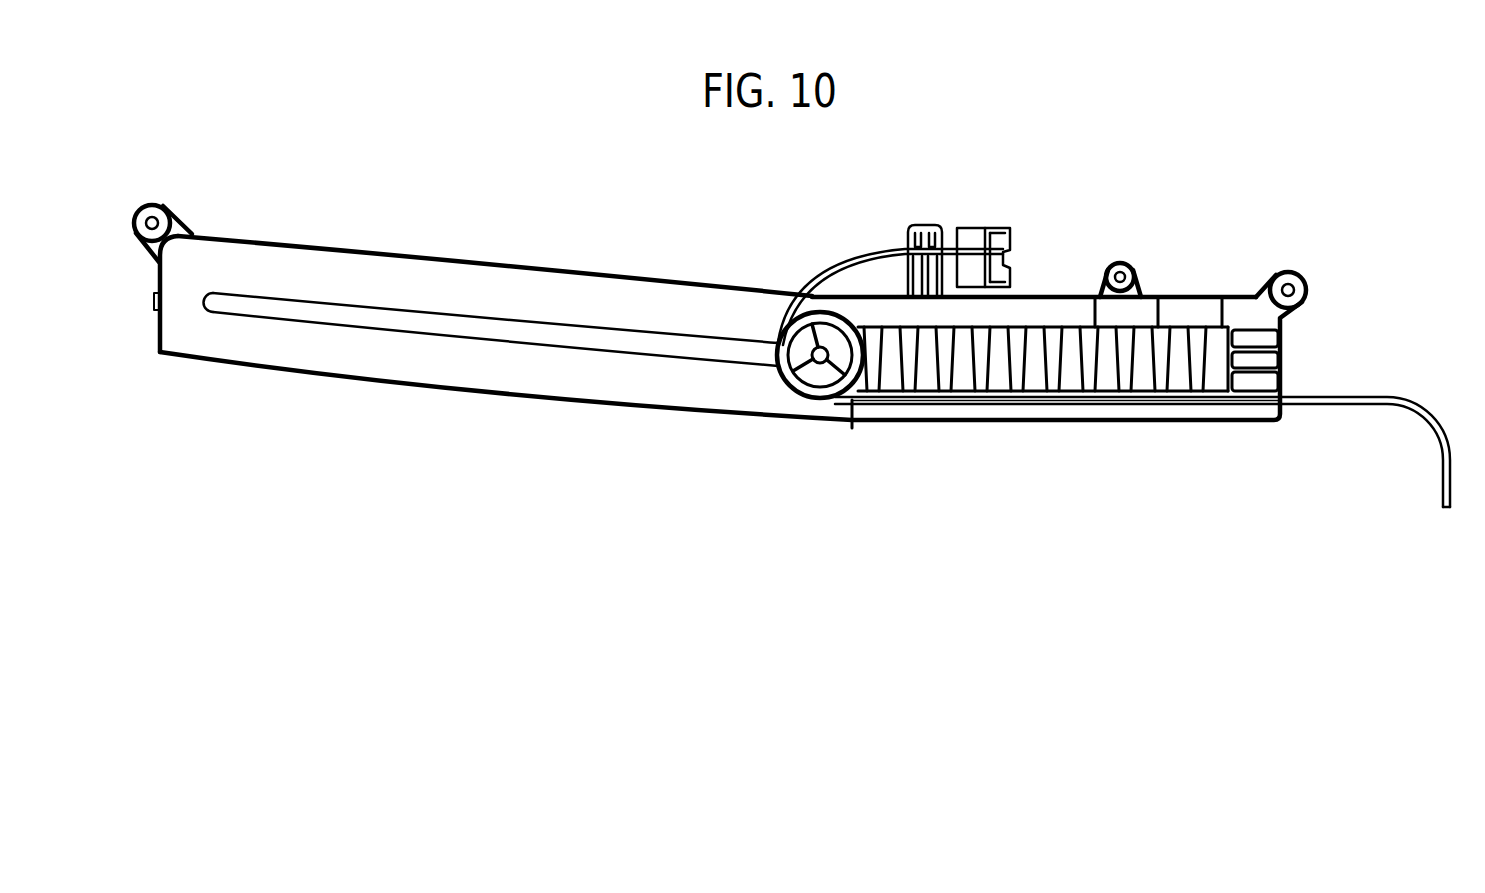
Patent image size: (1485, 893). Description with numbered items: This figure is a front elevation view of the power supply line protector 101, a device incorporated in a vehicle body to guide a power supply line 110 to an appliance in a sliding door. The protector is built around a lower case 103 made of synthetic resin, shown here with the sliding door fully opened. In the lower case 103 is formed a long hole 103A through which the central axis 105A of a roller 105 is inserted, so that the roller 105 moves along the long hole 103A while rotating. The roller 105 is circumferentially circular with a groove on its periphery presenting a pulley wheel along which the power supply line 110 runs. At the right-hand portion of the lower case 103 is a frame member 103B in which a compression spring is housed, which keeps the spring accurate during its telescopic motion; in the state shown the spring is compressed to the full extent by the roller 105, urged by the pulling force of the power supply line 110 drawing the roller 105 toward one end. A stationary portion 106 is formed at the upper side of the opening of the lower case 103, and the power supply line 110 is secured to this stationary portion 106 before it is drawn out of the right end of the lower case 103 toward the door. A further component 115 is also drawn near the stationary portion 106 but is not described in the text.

The power supply line protector 101 is at (307, 236).
The lower case 103 is at (547, 408).
The long hole 103A is at (413, 323).
The frame member 103B is at (1190, 325).
The roller 105 is at (797, 398).
The central axis 105A is at (827, 365).
The stationary portion 106 is at (910, 232).
The connector 115 is at (995, 240).
The power supply line 110 is at (1345, 400).